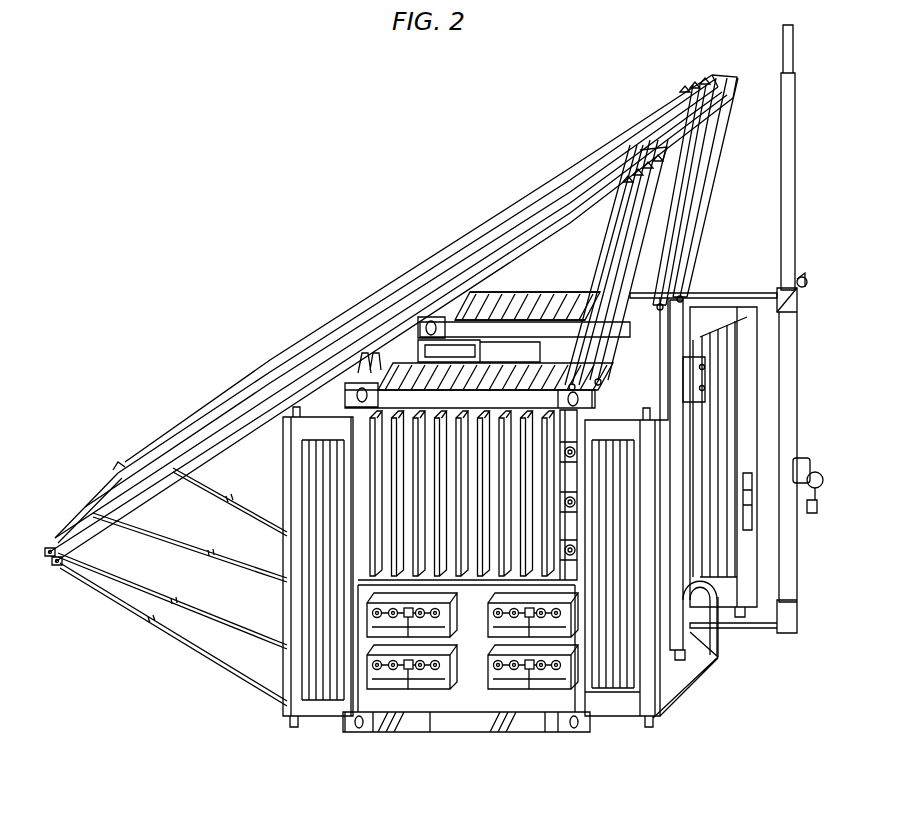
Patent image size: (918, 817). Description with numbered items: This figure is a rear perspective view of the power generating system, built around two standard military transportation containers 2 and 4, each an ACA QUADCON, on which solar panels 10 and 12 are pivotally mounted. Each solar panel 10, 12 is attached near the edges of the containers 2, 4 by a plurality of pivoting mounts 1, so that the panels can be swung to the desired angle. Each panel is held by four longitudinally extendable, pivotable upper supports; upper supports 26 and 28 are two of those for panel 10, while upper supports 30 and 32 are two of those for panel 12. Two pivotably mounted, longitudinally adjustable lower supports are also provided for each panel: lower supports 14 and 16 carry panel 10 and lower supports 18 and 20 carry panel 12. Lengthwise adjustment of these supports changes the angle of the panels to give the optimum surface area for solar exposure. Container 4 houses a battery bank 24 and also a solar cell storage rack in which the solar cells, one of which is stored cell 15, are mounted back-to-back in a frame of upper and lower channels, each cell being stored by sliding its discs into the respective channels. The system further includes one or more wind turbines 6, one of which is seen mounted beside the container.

The pivoting mount 1 is at (352, 386).
The transportation container 2 is at (553, 297).
The transportation container 4 is at (647, 660).
The wind turbine 6 is at (797, 408).
The solar panel 10 is at (620, 140).
The solar panel 12 is at (100, 500).
The lower support 14 is at (220, 500).
The stored solar cell 15 is at (428, 460).
The lower support 16 is at (168, 515).
The lower support 18 is at (137, 608).
The lower support 20 is at (197, 592).
The battery bank 24 is at (390, 683).
The upper support 26 is at (703, 208).
The upper support 28 is at (690, 243).
The upper support 30 is at (604, 282).
The upper support 32 is at (623, 247).